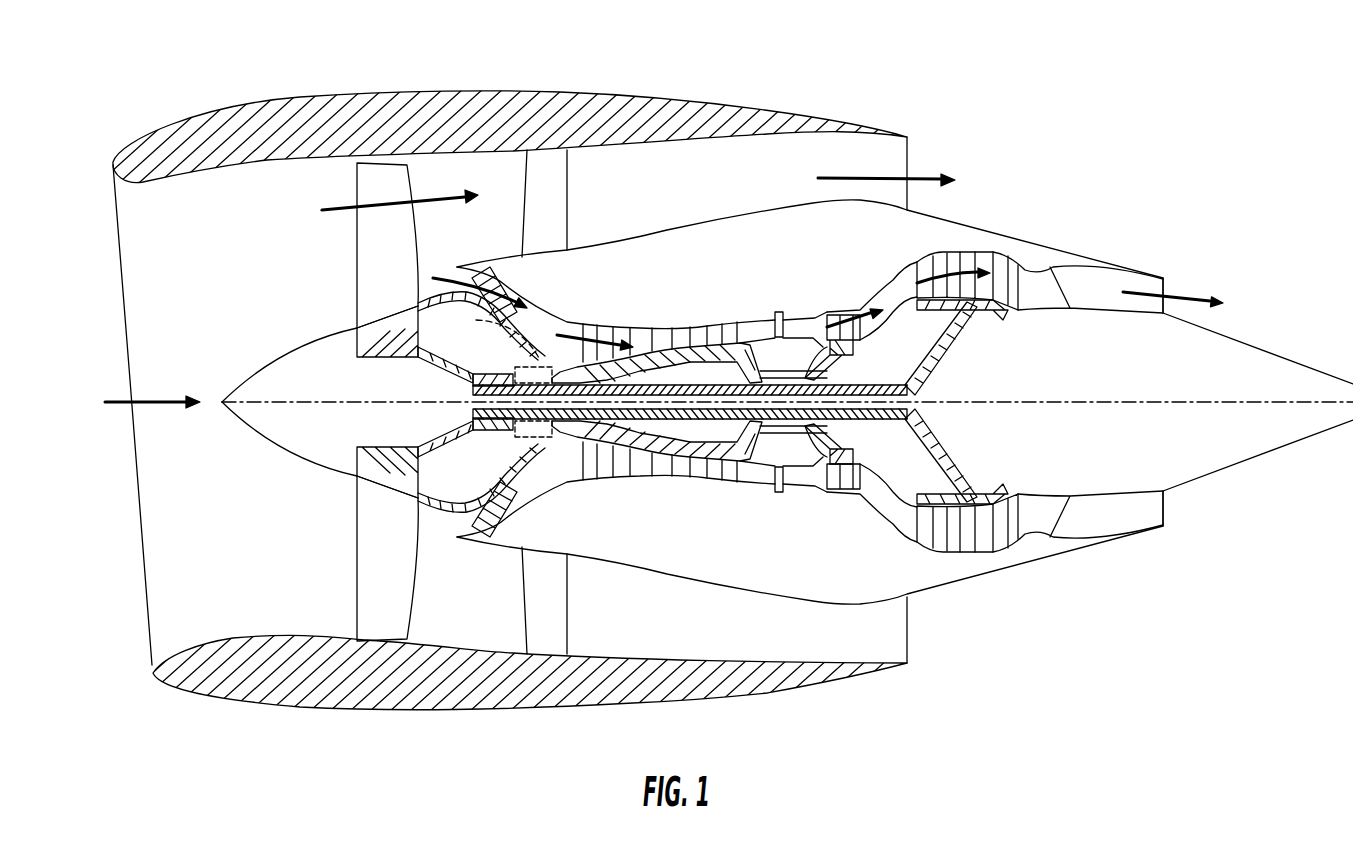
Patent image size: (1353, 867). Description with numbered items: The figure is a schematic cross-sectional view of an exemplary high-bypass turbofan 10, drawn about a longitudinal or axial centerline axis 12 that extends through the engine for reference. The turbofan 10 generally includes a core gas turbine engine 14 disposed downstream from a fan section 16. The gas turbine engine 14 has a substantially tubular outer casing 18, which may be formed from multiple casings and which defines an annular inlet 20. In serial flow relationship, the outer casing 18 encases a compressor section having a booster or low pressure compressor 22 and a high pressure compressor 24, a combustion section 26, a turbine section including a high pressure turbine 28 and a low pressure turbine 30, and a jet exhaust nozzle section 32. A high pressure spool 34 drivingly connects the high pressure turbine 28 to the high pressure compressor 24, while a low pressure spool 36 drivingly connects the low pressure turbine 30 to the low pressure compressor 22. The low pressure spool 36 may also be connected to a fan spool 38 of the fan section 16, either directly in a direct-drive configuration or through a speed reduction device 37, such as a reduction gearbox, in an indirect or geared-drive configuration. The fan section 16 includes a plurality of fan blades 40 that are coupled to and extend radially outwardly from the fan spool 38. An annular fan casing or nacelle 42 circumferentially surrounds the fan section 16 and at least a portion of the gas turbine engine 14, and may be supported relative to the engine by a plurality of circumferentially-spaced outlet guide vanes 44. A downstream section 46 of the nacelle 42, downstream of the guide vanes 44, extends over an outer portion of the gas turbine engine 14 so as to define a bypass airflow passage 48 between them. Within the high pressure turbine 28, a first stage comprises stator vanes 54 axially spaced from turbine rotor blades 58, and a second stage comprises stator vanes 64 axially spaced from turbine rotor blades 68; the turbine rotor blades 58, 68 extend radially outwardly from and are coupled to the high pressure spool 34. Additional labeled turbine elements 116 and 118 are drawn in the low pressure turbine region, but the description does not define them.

The turbofan 10 is at (1052, 115).
The centerline axis 12 is at (1103, 400).
The gas turbine engine 14 is at (727, 288).
The fan section 16 is at (397, 70).
The outer casing 18 is at (750, 590).
The annular inlet 20 is at (453, 527).
The low pressure compressor 22 is at (524, 492).
The high pressure compressor 24 is at (605, 480).
The combustion section 26 is at (797, 475).
The high pressure turbine 28 is at (872, 480).
The low pressure turbine 30 is at (1008, 565).
The jet exhaust nozzle section 32 is at (1165, 290).
The high pressure spool 34 is at (843, 347).
The low pressure spool 36 is at (527, 367).
The speed reduction device 37 is at (481, 326).
The fan spool 38 is at (412, 350).
The fan blades 40 is at (353, 580).
The nacelle 42 is at (405, 718).
The outlet guide vanes 44 is at (568, 213).
The downstream section 46 is at (740, 98).
The bypass airflow passage 48 is at (717, 194).
The stator vanes 54 is at (813, 500).
The turbine rotor blades 58 is at (820, 495).
The stator vanes 64 is at (843, 485).
The turbine rotor blades 68 is at (853, 487).
The low pressure turbine rotor blades 116 is at (912, 272).
The turbine casing 118 is at (927, 260).